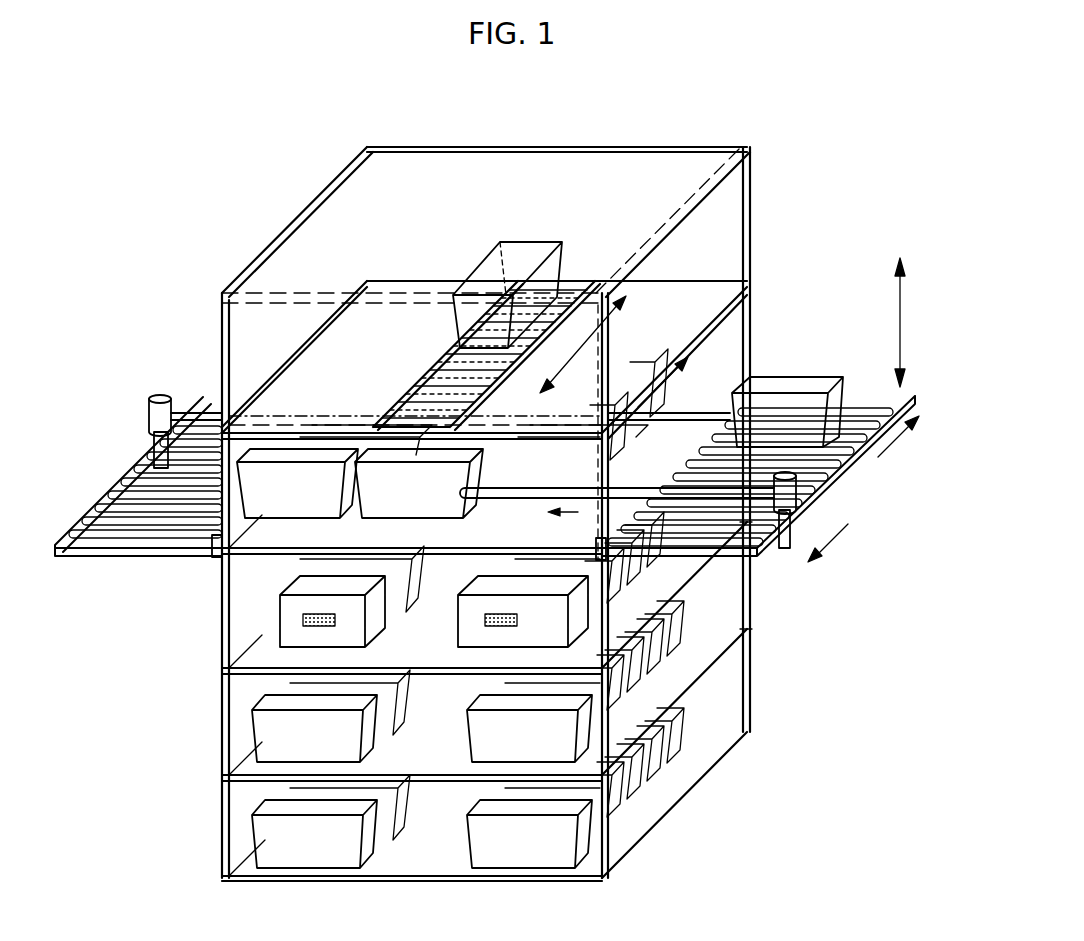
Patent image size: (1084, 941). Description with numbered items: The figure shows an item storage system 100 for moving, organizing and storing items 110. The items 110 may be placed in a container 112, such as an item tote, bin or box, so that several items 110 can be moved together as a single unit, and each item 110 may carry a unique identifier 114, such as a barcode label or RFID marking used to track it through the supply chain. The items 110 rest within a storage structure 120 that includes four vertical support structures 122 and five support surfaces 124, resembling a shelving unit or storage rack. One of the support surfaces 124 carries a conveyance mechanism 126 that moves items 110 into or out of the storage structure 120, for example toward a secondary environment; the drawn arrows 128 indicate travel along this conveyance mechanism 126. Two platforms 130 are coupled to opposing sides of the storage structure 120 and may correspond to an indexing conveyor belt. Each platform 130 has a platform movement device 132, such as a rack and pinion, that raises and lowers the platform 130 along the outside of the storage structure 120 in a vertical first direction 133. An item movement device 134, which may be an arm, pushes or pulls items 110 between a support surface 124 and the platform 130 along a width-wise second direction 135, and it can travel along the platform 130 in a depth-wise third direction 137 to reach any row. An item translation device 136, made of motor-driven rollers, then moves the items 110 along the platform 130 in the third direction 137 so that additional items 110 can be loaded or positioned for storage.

The item storage system 100 is at (735, 76).
The items 110 is at (287, 630).
The container 112 is at (265, 750).
The unique identifier 114 is at (300, 618).
The storage structure 120 is at (345, 200).
The support structures 122 is at (222, 735).
The support surfaces 124 is at (713, 668).
The conveyance mechanism 126 is at (428, 382).
The conveyor direction arrow 128 is at (588, 352).
The platform 130 is at (863, 442).
The platform movement device 132 is at (596, 545).
The first direction 133 is at (898, 300).
The item movement device 134 is at (153, 420).
The second direction 135 is at (590, 485).
The item translation device 136 is at (855, 372).
The third direction 137 is at (872, 485).